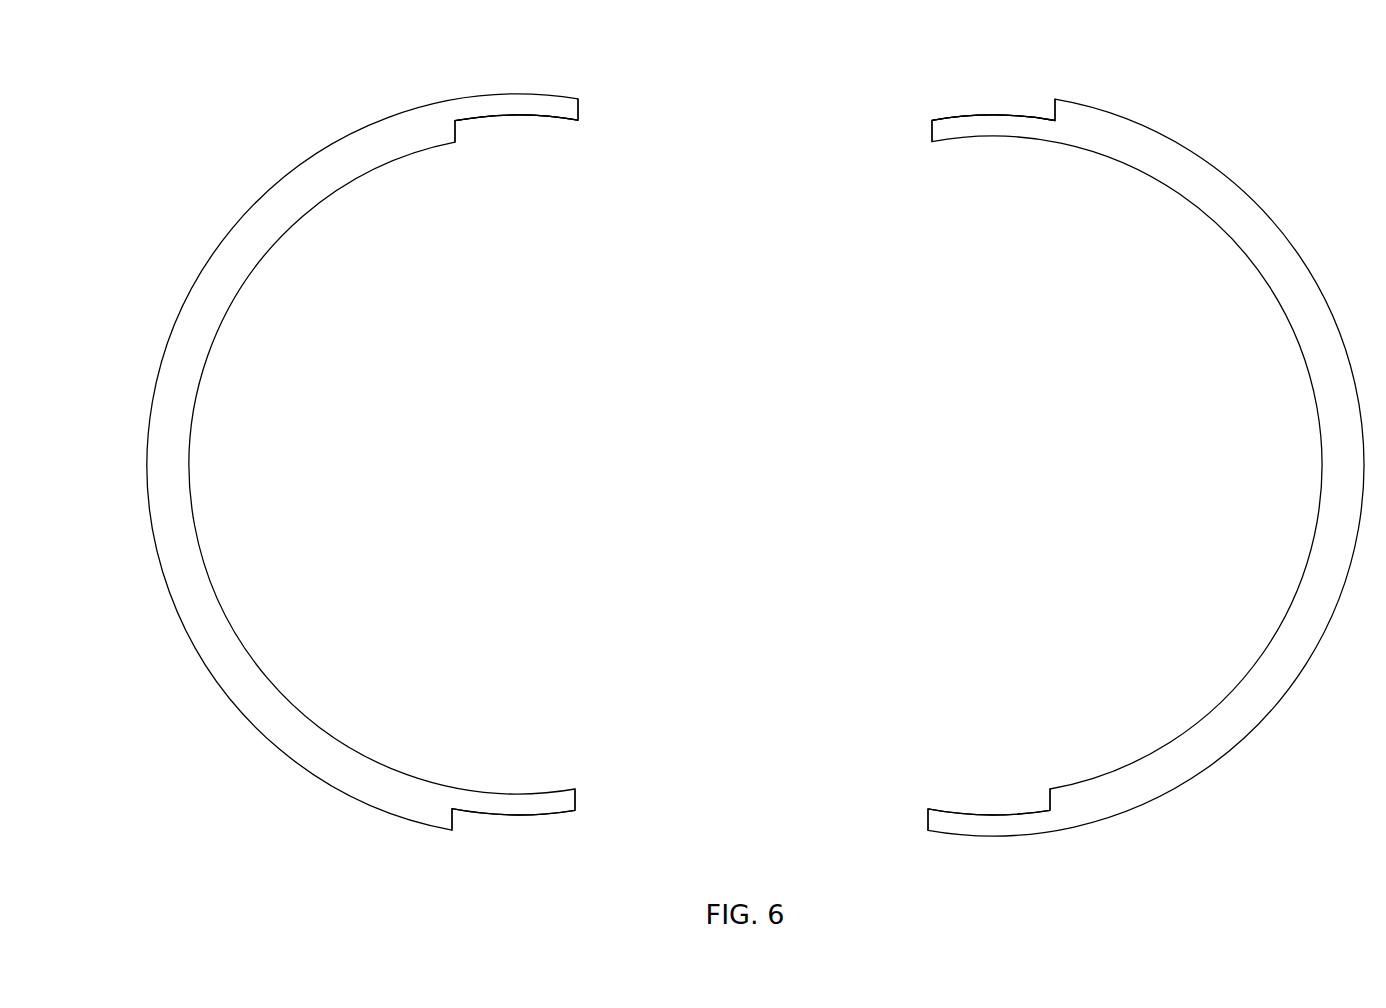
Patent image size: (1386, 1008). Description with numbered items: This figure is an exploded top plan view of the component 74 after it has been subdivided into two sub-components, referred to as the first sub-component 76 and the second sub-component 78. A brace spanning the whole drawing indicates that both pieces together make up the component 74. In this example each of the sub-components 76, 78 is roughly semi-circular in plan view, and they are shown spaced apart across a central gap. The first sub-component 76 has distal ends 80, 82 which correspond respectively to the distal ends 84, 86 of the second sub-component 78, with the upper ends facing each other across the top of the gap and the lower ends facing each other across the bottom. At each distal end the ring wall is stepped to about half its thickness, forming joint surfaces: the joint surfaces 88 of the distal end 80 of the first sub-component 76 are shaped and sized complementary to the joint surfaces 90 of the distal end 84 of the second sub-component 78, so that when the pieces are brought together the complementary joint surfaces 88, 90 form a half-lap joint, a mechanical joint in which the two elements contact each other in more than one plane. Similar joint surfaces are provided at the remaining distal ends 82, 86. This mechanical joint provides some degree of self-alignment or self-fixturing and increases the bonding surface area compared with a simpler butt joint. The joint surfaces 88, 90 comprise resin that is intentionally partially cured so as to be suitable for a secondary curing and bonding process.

The component 74 is at (1283, 75).
The first sub-component 76 is at (166, 387).
The second sub-component 78 is at (1300, 271).
The distal end 80 is at (515, 188).
The distal end 82 is at (527, 768).
The distal end 84 is at (997, 166).
The distal end 86 is at (964, 777).
The joint surfaces 88 is at (531, 120).
The joint surfaces 90 is at (985, 119).